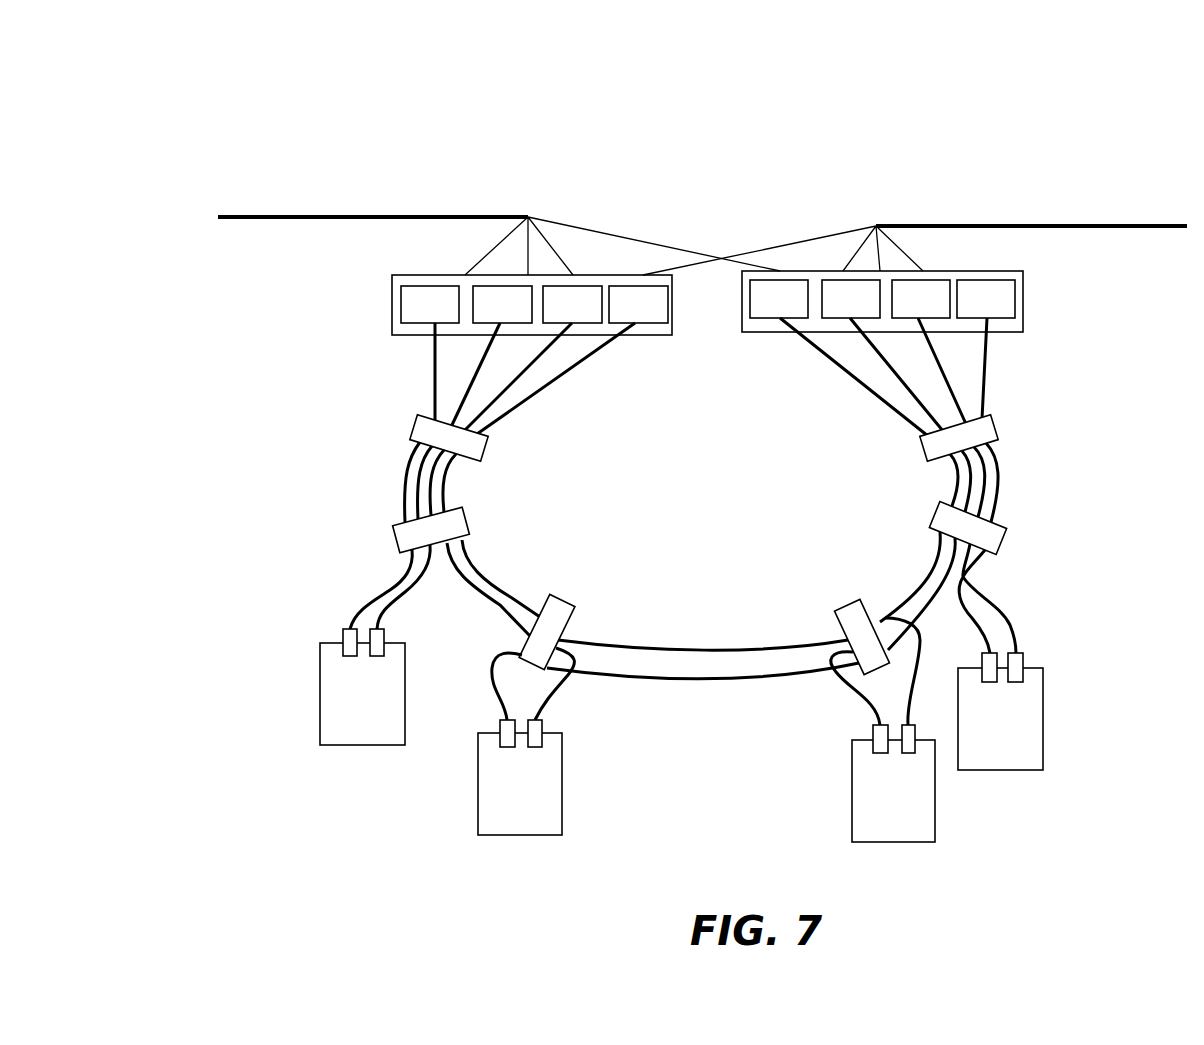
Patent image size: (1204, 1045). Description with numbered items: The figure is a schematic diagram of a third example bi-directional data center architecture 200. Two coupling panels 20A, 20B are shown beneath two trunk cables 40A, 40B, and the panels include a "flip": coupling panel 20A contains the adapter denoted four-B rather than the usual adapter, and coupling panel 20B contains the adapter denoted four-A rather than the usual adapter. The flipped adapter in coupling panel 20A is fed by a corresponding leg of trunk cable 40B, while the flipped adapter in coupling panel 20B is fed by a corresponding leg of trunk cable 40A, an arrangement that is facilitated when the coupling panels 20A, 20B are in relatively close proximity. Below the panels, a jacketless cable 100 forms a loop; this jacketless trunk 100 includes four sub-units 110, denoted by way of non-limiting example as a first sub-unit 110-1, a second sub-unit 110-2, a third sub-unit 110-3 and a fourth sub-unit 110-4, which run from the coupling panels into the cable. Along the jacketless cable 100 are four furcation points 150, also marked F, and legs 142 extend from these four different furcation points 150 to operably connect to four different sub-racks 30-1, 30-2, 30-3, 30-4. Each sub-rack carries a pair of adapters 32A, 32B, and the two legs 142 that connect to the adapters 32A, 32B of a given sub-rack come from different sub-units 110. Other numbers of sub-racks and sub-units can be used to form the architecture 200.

The third example architecture 200 is at (300, 76).
The trunk cable 40A is at (301, 183).
The trunk cable 40B is at (994, 189).
The coupling panel 20A is at (392, 308).
The coupling panel 20B is at (1023, 297).
The sub-units 110 is at (642, 379).
The first sub-unit 110-1 is at (435, 352).
The second sub-unit 110-2 is at (455, 405).
The third sub-unit 110-3 is at (537, 380).
The fourth sub-unit 110-4 is at (606, 343).
The jacketless cable 100 is at (378, 482).
The furcation point 150 is at (487, 446).
The legs 142 is at (370, 571).
The adapter 32A is at (350, 658).
The adapter 32B is at (377, 658).
The first sub-rack 30-1 is at (323, 676).
The second sub-rack 30-2 is at (548, 816).
The third sub-rack 30-3 is at (922, 823).
The fourth sub-rack 30-4 is at (1030, 754).